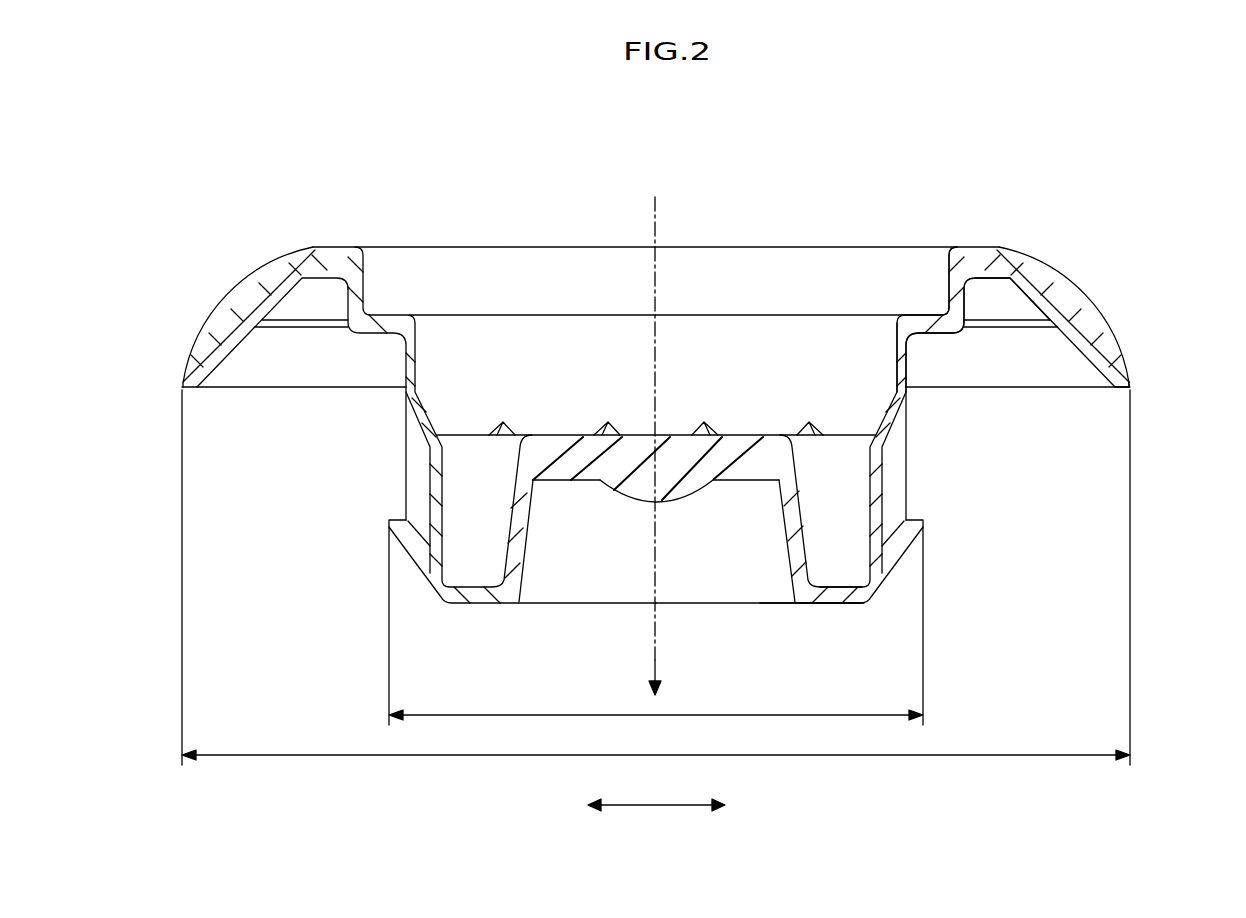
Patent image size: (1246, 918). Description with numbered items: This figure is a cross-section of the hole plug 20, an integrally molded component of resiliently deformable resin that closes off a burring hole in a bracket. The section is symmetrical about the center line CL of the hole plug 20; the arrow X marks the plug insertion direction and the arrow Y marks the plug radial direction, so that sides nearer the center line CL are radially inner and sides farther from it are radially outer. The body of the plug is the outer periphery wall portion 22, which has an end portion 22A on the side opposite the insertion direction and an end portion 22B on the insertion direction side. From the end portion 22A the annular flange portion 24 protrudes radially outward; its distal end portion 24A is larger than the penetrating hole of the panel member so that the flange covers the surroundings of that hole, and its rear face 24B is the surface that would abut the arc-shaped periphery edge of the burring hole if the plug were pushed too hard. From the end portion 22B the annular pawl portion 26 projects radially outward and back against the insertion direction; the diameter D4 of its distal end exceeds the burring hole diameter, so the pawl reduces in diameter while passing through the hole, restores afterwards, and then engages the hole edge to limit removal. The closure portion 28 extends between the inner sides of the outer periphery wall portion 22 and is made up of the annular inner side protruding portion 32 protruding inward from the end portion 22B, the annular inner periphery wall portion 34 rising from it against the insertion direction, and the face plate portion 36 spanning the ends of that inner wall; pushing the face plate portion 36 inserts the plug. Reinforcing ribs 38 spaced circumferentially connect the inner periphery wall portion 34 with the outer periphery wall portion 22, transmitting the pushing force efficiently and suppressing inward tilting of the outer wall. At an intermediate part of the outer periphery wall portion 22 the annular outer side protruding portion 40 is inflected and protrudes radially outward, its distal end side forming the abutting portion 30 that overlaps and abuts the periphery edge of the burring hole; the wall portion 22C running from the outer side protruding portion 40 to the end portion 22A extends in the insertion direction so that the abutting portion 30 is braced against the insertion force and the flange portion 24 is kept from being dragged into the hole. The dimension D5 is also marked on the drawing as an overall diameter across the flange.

The hole plug 20 is at (1090, 148).
The outer periphery wall portion 22 is at (897, 442).
The end portion 22A is at (952, 247).
The end portion 22B is at (862, 606).
The wall portion 22C is at (966, 300).
The flange portion 24 is at (1103, 310).
The distal end portion 24A is at (1132, 387).
The rear face 24B is at (1005, 297).
The pawl portion 26 is at (925, 522).
The closure portion 28 is at (726, 420).
The abutting portion 30 is at (947, 340).
The inner side protruding portion 32 is at (822, 606).
The inner periphery wall portion 34 is at (801, 511).
The face plate portion 36 is at (757, 434).
The reinforcing ribs 38 is at (472, 434).
The outer side protruding portion 40 is at (922, 340).
The center line CL is at (655, 203).
The arrow X is at (660, 672).
The arrow Y is at (655, 813).
The diameter D4 is at (678, 717).
The diameter D5 is at (678, 757).